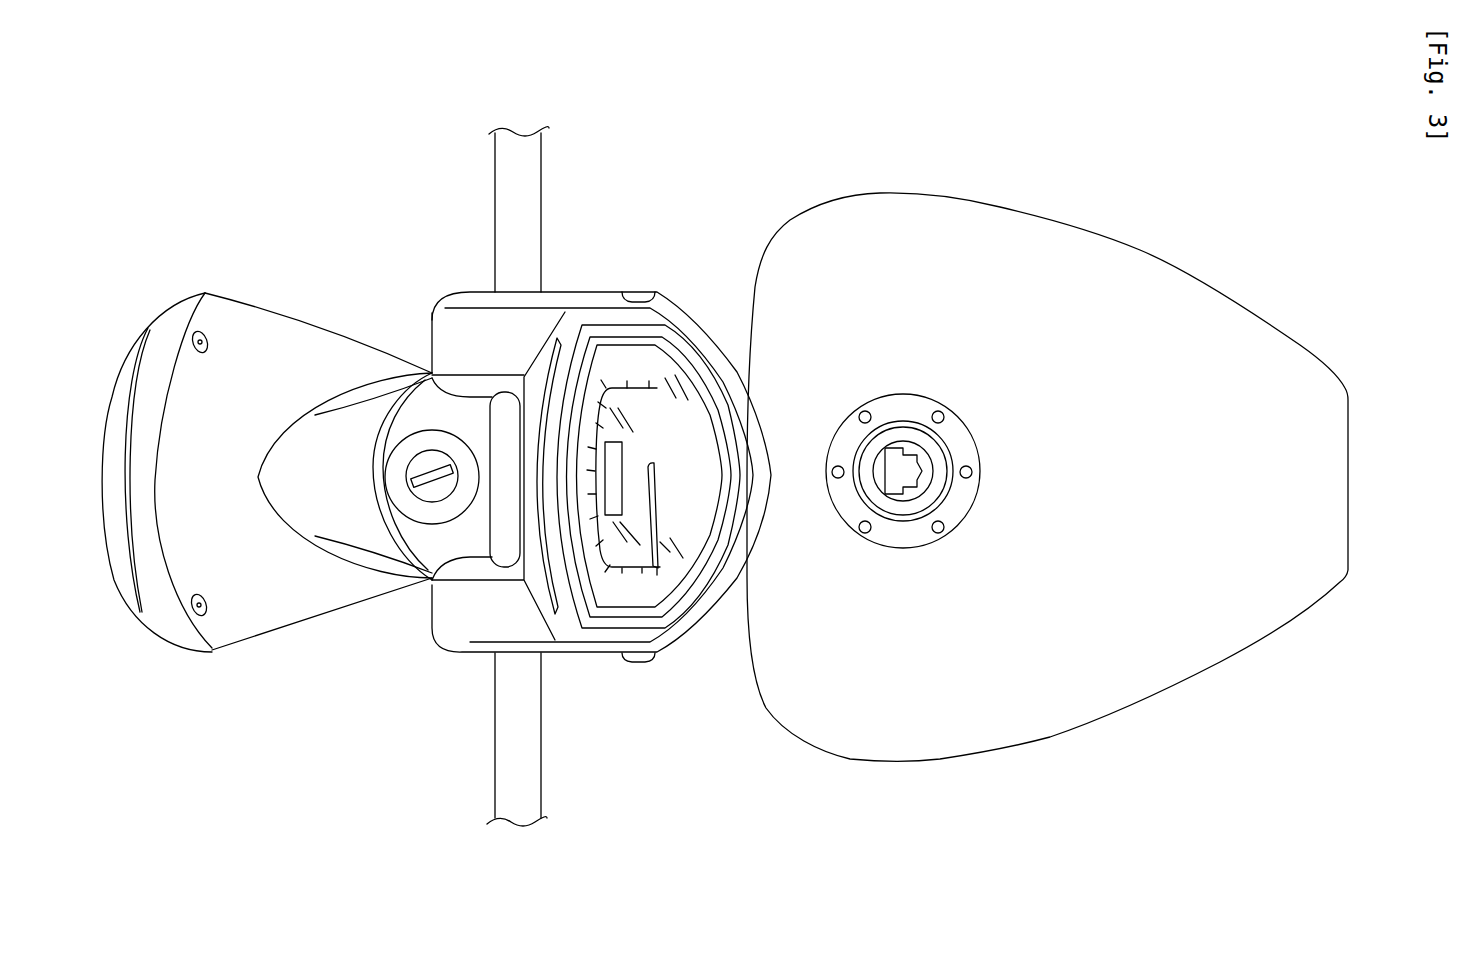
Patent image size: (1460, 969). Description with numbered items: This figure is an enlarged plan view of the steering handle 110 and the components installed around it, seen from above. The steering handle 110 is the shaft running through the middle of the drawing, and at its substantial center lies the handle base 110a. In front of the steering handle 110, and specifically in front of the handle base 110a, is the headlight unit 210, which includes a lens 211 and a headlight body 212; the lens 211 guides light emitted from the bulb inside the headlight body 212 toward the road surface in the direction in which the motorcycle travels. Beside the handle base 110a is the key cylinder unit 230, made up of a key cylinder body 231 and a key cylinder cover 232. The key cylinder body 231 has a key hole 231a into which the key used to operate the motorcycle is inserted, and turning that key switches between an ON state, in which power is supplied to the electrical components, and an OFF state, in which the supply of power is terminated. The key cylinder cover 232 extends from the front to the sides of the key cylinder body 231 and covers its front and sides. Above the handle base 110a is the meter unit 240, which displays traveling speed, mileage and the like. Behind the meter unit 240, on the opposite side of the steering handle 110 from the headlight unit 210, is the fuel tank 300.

The steering handle 110 is at (523, 768).
The handle base 110a is at (505, 417).
The headlight unit 210 is at (262, 528).
The lens 211 is at (122, 565).
The headlight body 212 is at (231, 637).
The key cylinder unit 230 is at (398, 566).
The key cylinder body 231 is at (423, 513).
The key hole 231a is at (437, 481).
The key cylinder cover 232 is at (368, 563).
The meter unit 240 is at (596, 636).
The fuel tank 300 is at (876, 745).